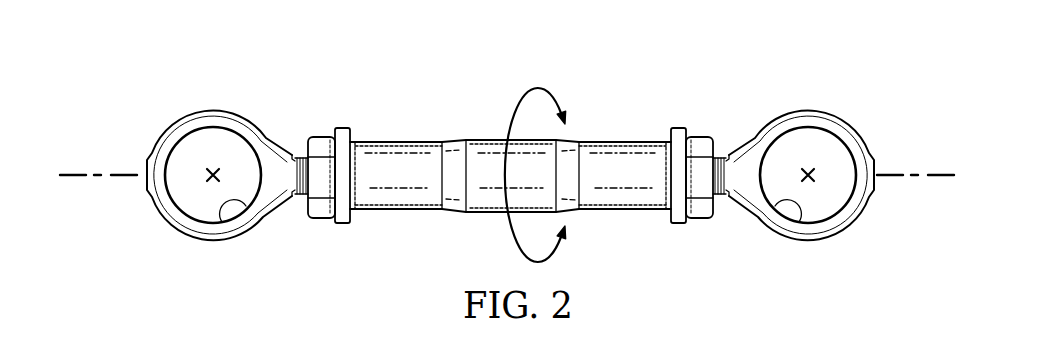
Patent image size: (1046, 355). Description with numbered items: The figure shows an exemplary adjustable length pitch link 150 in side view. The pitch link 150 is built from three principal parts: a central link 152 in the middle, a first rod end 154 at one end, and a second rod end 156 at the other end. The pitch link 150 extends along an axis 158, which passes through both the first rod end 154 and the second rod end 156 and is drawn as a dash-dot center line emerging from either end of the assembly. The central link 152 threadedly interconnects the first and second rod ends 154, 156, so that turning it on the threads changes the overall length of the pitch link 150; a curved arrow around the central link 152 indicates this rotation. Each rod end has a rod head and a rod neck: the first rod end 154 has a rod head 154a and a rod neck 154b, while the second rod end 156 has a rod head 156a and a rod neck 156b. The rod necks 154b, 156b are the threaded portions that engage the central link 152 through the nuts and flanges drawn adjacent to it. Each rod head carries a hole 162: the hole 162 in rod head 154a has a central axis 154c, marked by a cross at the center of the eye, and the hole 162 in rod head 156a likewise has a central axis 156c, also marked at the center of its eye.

The adjustable length pitch link 150 is at (436, 66).
The central link 152 is at (622, 140).
The first rod end 154 is at (153, 106).
The rod head 154a is at (213, 111).
The rod neck 154b is at (298, 158).
The central axis 154c is at (207, 181).
The second rod end 156 is at (868, 106).
The rod head 156a is at (807, 111).
The rod neck 156b is at (722, 158).
The central axis 156c is at (815, 181).
The axis 158 is at (82, 172).
The hole 162 is at (230, 220).